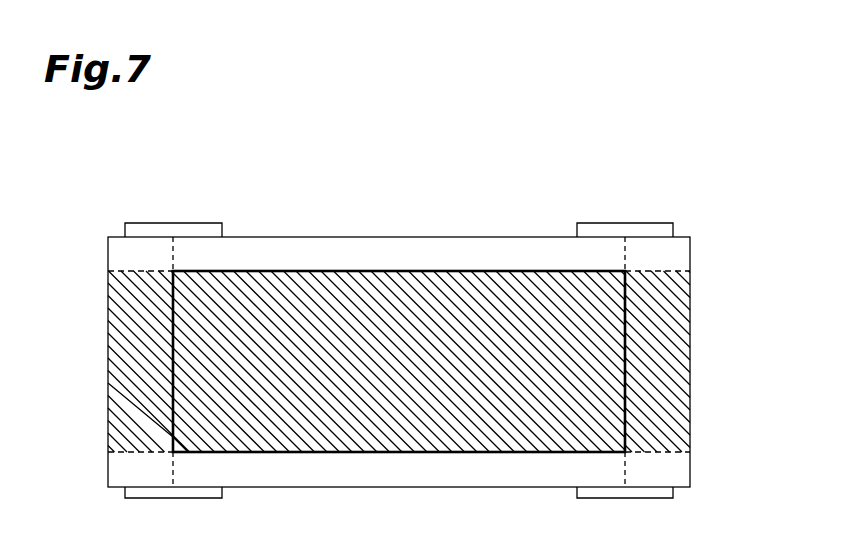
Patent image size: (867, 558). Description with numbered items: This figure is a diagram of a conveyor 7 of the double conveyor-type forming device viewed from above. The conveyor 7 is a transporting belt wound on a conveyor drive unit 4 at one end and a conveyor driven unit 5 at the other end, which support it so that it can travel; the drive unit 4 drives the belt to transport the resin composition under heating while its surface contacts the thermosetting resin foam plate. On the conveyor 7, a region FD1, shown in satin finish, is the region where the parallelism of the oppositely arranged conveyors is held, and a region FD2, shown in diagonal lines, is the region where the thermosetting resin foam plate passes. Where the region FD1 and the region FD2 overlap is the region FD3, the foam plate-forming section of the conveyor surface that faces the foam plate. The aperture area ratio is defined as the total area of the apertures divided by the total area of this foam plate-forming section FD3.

The conveyor 7 is at (80, 234).
The conveyor drive unit 4 is at (198, 224).
The conveyor driven unit 5 is at (618, 221).
The region where the parallelism of conveyors is held FD1 is at (625, 249).
The region where the thermosetting resin foam plate passes FD2 is at (655, 452).
The foam plate-forming section of the conveyor surface FD3 is at (503, 268).